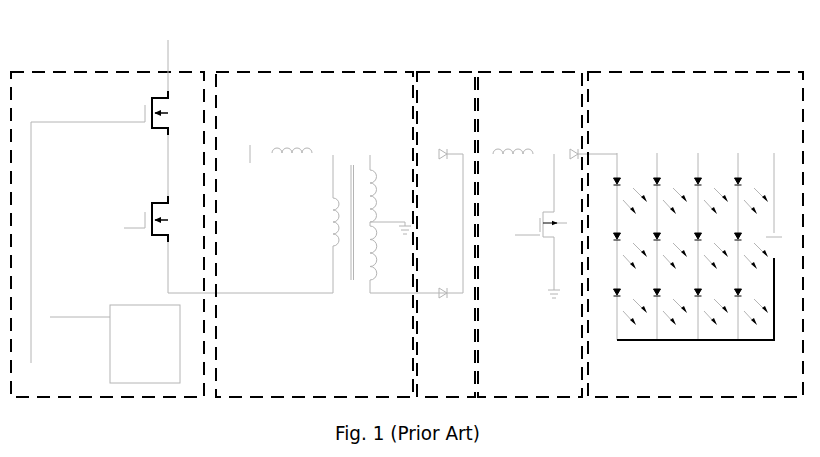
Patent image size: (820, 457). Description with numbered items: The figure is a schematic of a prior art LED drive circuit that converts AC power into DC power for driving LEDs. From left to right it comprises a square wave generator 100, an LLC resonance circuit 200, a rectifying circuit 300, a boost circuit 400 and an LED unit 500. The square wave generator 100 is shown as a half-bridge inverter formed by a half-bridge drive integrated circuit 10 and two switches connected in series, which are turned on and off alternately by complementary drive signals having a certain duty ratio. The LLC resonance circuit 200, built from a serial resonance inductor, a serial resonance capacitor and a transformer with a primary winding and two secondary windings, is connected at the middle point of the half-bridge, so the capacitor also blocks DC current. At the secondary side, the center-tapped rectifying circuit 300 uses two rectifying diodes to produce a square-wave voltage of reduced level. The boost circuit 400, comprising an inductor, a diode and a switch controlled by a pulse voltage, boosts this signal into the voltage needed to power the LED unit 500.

The square wave generator 100 is at (172, 211).
The LLC resonance circuit 200 is at (256, 72).
The rectifying circuit 300 is at (432, 72).
The boost circuit 400 is at (493, 72).
The LED unit 500 is at (645, 72).
The half-bridge drive integrated circuit 10 is at (124, 305).